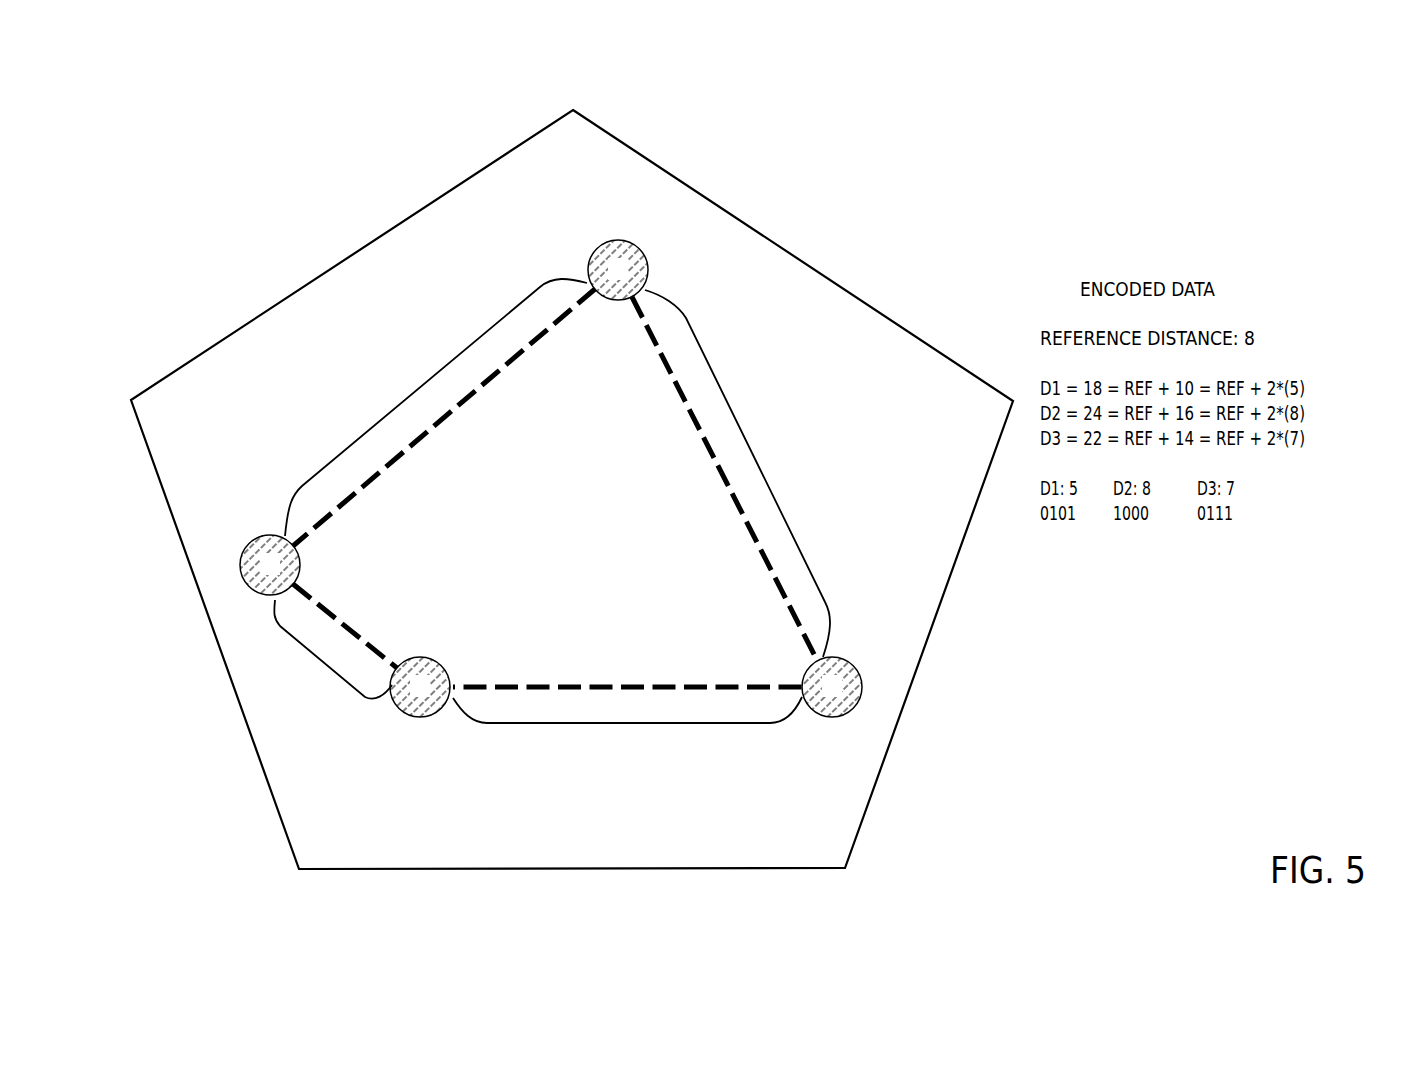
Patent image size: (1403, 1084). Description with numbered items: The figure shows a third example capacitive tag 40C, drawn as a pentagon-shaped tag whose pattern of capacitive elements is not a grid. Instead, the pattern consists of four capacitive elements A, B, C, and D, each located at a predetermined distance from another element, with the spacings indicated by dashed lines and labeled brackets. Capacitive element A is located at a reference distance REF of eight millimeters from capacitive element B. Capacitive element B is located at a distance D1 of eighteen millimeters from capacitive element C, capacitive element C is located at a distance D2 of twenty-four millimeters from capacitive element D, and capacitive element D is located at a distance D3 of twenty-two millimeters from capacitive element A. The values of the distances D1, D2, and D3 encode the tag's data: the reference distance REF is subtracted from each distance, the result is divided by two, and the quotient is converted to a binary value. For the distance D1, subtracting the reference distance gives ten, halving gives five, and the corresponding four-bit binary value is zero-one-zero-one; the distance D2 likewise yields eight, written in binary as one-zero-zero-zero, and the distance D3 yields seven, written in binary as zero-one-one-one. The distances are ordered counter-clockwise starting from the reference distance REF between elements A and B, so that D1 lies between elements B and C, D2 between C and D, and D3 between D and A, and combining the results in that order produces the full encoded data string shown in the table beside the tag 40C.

The third example capacitive tag 40C is at (797, 272).
The distance D1 is at (627, 723).
The distance D2 is at (757, 463).
The distance D3 is at (418, 387).
The reference distance REF is at (320, 662).
The capacitive element A is at (270, 565).
The capacitive element B is at (420, 687).
The capacitive element C is at (832, 687).
The capacitive element D is at (618, 270).